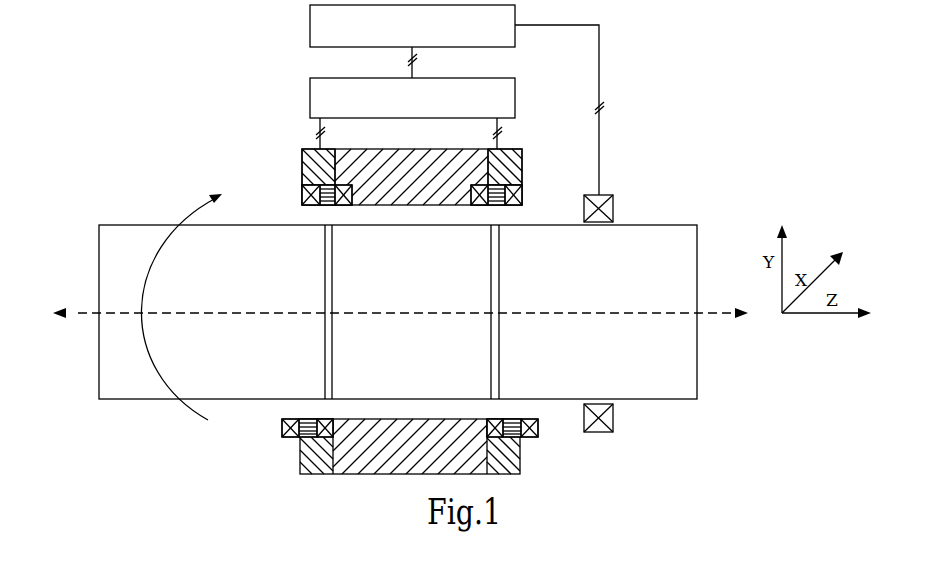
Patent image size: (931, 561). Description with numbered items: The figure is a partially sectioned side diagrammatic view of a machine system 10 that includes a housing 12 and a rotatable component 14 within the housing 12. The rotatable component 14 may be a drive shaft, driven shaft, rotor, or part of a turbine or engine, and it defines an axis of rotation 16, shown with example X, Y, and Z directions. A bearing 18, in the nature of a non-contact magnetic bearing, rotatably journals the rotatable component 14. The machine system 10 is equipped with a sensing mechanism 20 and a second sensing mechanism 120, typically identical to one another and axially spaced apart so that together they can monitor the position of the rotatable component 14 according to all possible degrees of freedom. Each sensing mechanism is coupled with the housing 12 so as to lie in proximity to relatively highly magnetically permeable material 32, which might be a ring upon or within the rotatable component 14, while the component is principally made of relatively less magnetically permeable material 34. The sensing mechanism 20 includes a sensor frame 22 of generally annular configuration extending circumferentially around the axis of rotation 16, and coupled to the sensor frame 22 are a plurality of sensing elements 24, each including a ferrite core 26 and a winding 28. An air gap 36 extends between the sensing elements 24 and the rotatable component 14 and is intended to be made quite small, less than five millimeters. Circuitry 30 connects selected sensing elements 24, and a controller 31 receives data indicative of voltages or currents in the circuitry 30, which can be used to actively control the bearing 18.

The machine system 10 is at (690, 108).
The housing 12 is at (375, 474).
The rotatable component 14 is at (155, 399).
The axis of rotation 16 is at (717, 318).
The bearing 18 is at (599, 432).
The sensing mechanism 20 is at (302, 116).
The sensor frame 22 is at (302, 152).
The sensing elements 24 is at (383, 175).
The ferrite core 26 is at (326, 188).
The winding 28 is at (302, 188).
The circuitry 30 is at (310, 80).
The controller 31 is at (310, 9).
The relatively highly magnetically permeable material 32 is at (333, 272).
The relatively less magnetically permeable material 34 is at (248, 346).
The air gap 36 is at (300, 407).
The second sensing mechanism 120 is at (409, 171).